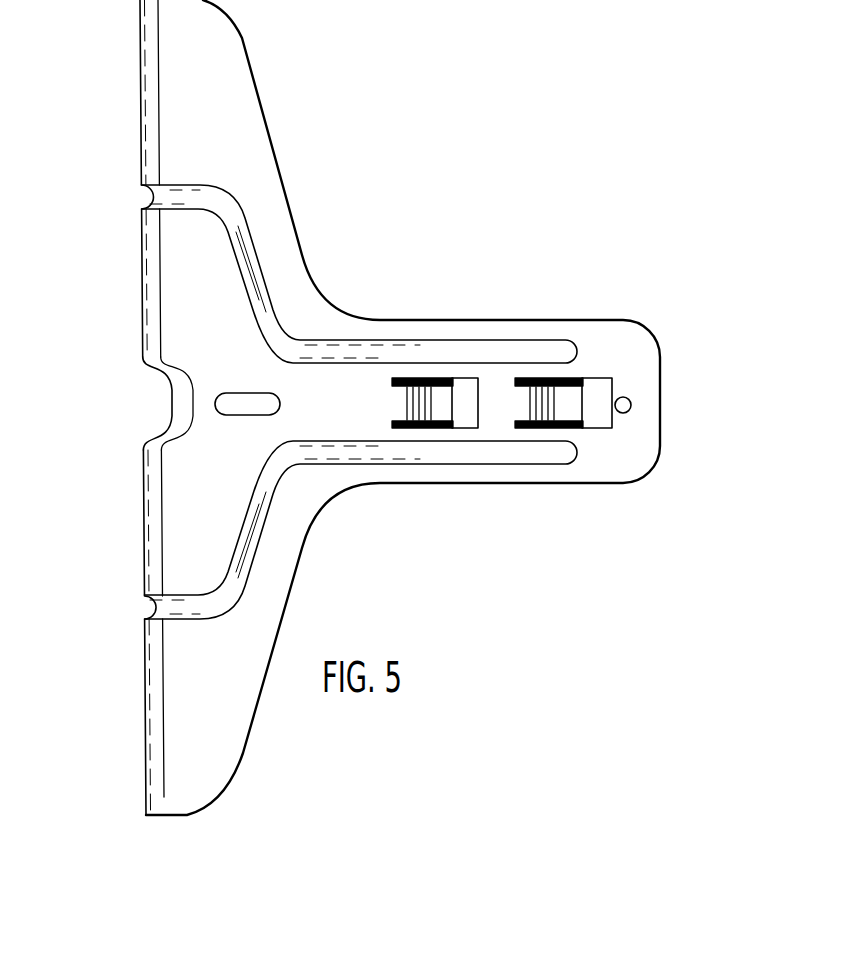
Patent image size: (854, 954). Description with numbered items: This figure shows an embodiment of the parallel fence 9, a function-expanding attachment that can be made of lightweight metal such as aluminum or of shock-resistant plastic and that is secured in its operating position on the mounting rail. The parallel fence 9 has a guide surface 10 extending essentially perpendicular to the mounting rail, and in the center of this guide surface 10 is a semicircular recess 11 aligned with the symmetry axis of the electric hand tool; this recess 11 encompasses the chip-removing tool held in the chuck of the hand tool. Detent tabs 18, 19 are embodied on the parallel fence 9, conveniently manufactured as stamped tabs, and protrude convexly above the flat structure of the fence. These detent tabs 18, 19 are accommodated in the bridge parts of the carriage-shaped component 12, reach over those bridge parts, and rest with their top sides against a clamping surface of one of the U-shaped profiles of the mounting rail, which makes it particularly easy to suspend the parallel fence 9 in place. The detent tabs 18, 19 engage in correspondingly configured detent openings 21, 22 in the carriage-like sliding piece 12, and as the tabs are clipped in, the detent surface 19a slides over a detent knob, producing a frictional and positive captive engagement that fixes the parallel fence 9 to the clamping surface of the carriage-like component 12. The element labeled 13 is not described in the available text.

The parallel fence 9 is at (330, 247).
The guide surface 10 is at (140, 98).
The semicircular recess 11 is at (163, 410).
The carriage-shaped component 12 is at (243, 408).
The guide channel 13 is at (442, 447).
The detent tab 18 is at (440, 404).
The detent tab 19 is at (572, 404).
The detent surface 19a is at (632, 403).
The detent opening 21 is at (468, 416).
The detent opening 22 is at (598, 413).